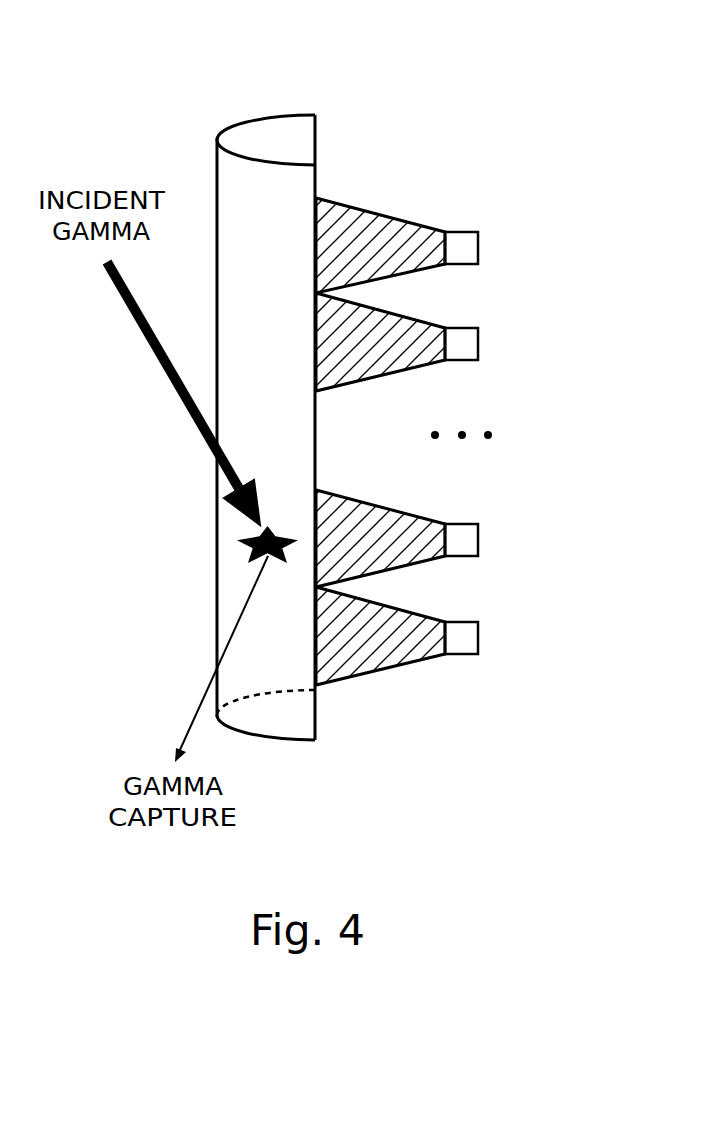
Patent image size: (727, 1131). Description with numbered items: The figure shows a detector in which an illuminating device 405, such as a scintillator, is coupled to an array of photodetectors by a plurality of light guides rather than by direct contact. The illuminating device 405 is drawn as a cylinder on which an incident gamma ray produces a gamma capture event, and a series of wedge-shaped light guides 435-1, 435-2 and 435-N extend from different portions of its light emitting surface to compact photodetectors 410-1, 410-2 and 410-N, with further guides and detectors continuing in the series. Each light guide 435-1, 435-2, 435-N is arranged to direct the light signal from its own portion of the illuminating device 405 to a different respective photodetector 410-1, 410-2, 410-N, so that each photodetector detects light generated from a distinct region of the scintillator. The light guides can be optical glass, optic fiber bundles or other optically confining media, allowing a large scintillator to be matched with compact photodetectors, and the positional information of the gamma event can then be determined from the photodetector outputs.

The illuminating device 405 is at (278, 133).
The light guide 435-N is at (400, 355).
The photodetector 410-N is at (460, 335).
The light guide 435-2 is at (400, 551).
The photodetector 410-2 is at (460, 532).
The light guide 435-1 is at (343, 657).
The photodetector 410-1 is at (460, 645).